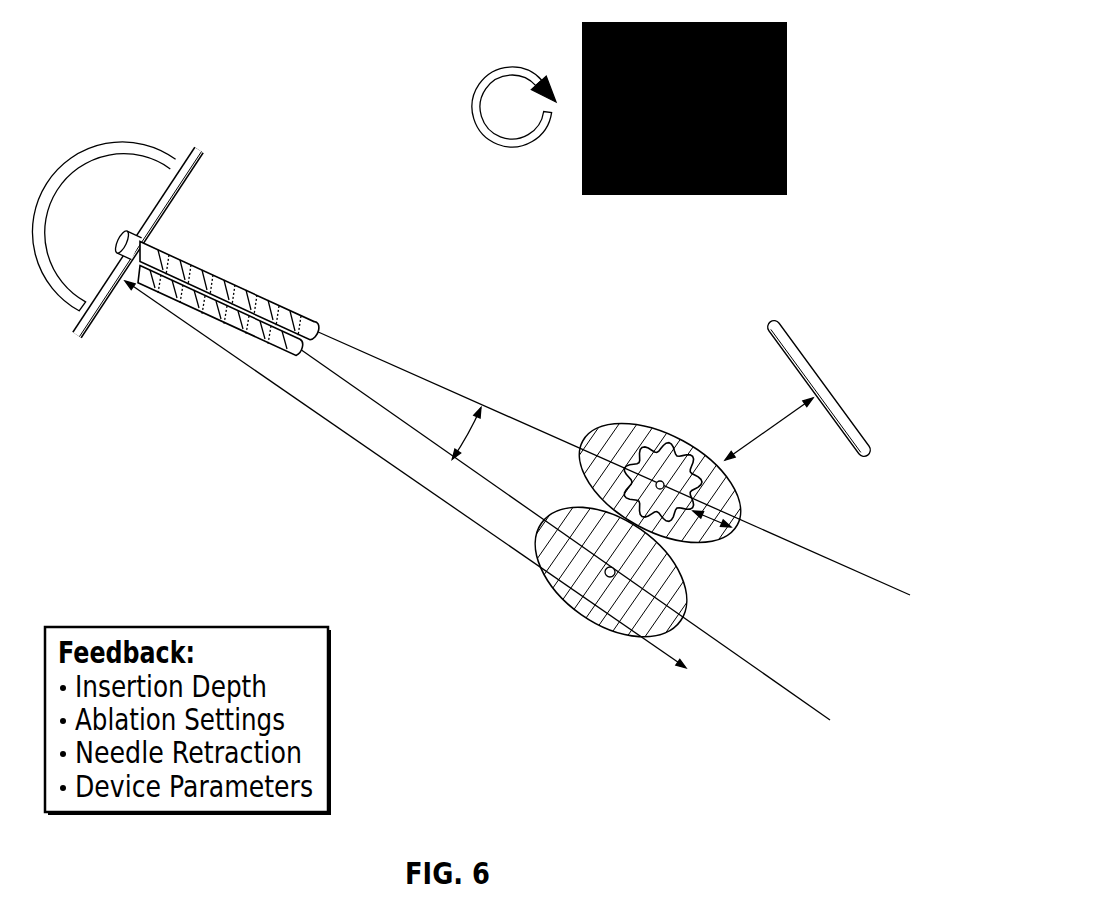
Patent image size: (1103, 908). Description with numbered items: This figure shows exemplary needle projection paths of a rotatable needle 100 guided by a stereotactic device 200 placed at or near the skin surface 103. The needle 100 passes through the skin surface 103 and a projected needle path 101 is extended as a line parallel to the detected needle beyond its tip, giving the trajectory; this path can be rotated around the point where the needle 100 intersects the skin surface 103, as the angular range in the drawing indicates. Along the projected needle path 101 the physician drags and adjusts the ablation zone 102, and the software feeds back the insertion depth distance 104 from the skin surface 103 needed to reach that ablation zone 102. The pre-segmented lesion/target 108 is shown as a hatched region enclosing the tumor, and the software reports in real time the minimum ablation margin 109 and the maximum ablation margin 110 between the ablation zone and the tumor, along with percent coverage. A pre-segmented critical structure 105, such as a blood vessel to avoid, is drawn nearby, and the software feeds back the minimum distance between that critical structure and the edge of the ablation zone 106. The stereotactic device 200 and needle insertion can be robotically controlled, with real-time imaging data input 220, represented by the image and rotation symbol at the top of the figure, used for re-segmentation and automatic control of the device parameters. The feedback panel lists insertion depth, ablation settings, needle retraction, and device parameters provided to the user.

The needle 100 is at (233, 300).
The projected needle path 101 is at (355, 396).
The ablation zone 102 is at (590, 617).
The skin surface 103 is at (191, 186).
The insertion depth distance 104 is at (248, 368).
The critical structure 105 is at (832, 382).
The minimum distance between critical structure and edge of ablation zone 106 is at (750, 443).
The pre-segmented lesion/target 108 is at (653, 443).
The minimum ablation margin 109 is at (685, 445).
The maximum ablation margin 110 is at (739, 498).
The stereotactic device 200 is at (90, 163).
The real-time imaging data input 220 is at (497, 68).